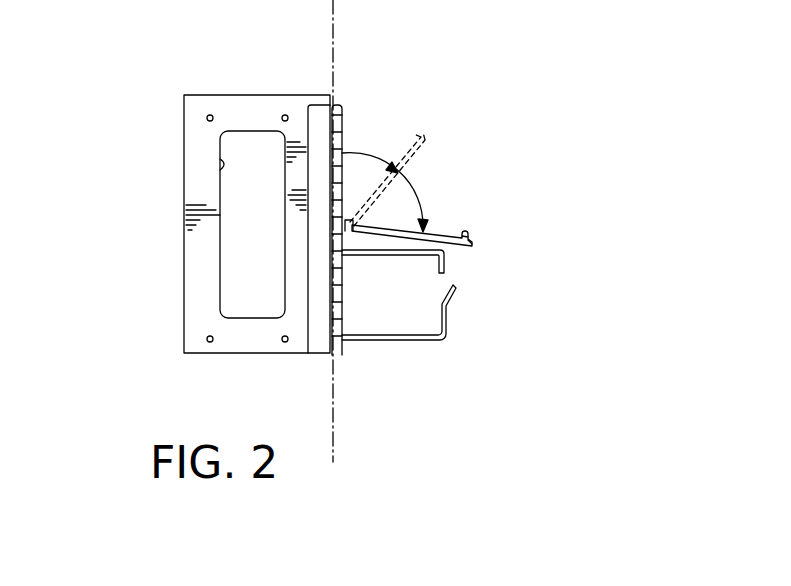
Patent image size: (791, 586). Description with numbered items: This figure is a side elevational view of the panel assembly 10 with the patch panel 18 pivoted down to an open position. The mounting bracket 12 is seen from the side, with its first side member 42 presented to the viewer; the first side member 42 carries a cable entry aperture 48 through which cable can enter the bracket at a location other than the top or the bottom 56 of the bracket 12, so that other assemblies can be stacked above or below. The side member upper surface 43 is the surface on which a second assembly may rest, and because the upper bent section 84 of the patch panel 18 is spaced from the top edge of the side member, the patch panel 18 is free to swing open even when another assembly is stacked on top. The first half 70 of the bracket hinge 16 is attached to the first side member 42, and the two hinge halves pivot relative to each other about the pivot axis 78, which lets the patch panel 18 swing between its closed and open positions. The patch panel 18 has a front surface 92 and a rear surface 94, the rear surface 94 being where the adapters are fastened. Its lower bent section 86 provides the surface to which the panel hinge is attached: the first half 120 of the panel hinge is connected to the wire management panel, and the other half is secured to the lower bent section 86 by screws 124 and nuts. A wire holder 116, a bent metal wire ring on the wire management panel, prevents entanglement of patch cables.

The panel assembly 10 is at (148, 90).
The mounting bracket 12 is at (211, 189).
The bracket hinge 16 is at (207, 224).
The patch panel 18 is at (455, 191).
The first side member 42 is at (196, 318).
The side member upper surface 43 is at (212, 189).
The cable entry aperture 48 is at (222, 164).
The bottom of the bracket 56 is at (289, 86).
The first half of the bracket hinge 70 is at (310, 353).
The pivot axis 78 is at (336, 20).
The upper bent section 84 is at (472, 241).
The lower bent section 86 is at (351, 221).
The front surface of the patch panel 92 is at (461, 253).
The rear surface of the patch panel 94 is at (438, 236).
The wire holder 116 is at (425, 343).
The first half of the panel hinge 120 is at (350, 218).
The screws 124 is at (402, 212).